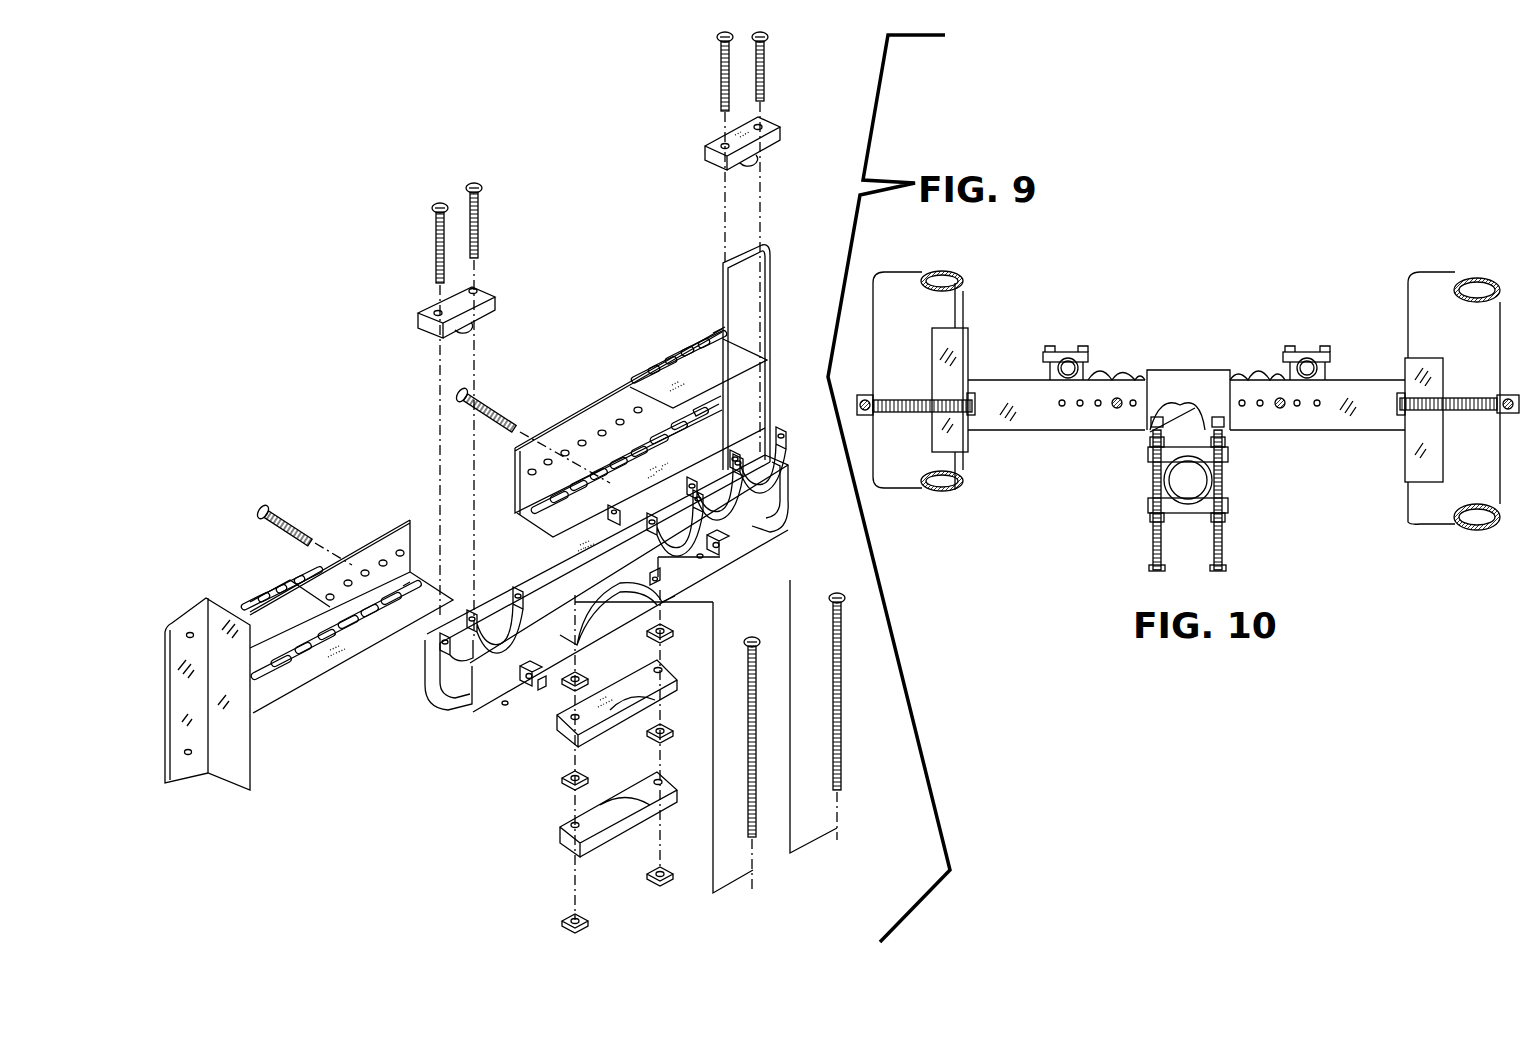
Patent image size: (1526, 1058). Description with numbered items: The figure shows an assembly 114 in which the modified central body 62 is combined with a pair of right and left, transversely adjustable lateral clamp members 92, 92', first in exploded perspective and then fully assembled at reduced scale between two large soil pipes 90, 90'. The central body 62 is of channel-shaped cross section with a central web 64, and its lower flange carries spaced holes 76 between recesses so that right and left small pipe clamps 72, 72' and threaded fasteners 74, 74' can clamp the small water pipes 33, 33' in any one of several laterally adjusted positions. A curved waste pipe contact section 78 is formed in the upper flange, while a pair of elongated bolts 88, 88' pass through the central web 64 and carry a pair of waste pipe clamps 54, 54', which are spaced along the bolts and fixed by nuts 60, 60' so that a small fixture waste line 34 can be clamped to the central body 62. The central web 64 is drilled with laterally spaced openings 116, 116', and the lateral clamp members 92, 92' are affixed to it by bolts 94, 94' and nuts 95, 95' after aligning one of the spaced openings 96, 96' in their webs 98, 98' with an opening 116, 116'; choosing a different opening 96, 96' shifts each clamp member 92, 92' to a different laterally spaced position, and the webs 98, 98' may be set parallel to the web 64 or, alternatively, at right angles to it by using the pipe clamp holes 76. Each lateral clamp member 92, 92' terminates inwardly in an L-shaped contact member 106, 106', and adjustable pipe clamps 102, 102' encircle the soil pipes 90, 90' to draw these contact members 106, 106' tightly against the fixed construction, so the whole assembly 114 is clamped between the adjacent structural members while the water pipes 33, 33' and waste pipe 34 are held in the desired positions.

In FIG. 10, the small pipe 33 is at (1326, 350).
In FIG. 10, the small pipe 33' is at (1065, 348).
In FIG. 10, the waste pipe 34 is at (1215, 470).
In FIG. 9, the waste pipe clamp 54 is at (631, 814).
In FIG. 10, the waste pipe clamp 54 is at (1208, 513).
In FIG. 9, the waste pipe clamp 54' is at (634, 703).
In FIG. 10, the waste pipe clamp 54' is at (1209, 459).
In FIG. 9, the nut 60 is at (675, 779).
In FIG. 10, the nut 60 is at (1221, 492).
In FIG. 9, the nut 60' is at (562, 820).
In FIG. 9, the modified central body 62 is at (790, 492).
In FIG. 10, the modified central body 62 is at (1173, 387).
In FIG. 9, the central web 64 is at (540, 670).
In FIG. 9, the small pipe clamp 72 is at (765, 141).
In FIG. 10, the small pipe clamp 72 is at (1306, 347).
In FIG. 9, the small pipe clamp 72' is at (478, 306).
In FIG. 10, the small pipe clamp 72' is at (1084, 350).
In FIG. 9, the threaded fastener 74 is at (761, 243).
In FIG. 10, the threaded fastener 74 is at (1336, 353).
In FIG. 9, the threaded fastener 74' is at (479, 411).
In FIG. 10, the threaded fastener 74' is at (1103, 350).
In FIG. 9, the spaced holes 76 is at (783, 458).
In FIG. 9, the curved waste pipe contact section 78 is at (610, 613).
In FIG. 10, the curved waste pipe contact section 78 is at (1160, 460).
In FIG. 9, the elongated bolt 88 is at (855, 716).
In FIG. 10, the elongated bolt 88 is at (1249, 501).
In FIG. 9, the elongated bolt 88' is at (786, 767).
In FIG. 10, the elongated bolt 88' is at (1176, 494).
In FIG. 10, the soil pipe 90 is at (1418, 386).
In FIG. 10, the soil pipe 90' is at (948, 381).
In FIG. 9, the lateral clamp member 92 is at (640, 433).
In FIG. 10, the lateral clamp member 92 is at (1317, 349).
In FIG. 9, the lateral clamp member 92' is at (351, 601).
In FIG. 10, the lateral clamp member 92' is at (1056, 389).
In FIG. 9, the bolt 94 is at (532, 428).
In FIG. 10, the bolt 94 is at (1397, 428).
In FIG. 9, the bolt 94' is at (303, 529).
In FIG. 10, the bolt 94' is at (989, 430).
In FIG. 9, the nut 95 is at (772, 568).
In FIG. 9, the nut 95' is at (525, 729).
In FIG. 9, the spaced openings 96 is at (585, 426).
In FIG. 9, the spaced openings 96' is at (338, 575).
In FIG. 9, the central web 98 is at (693, 370).
In FIG. 9, the central web 98' is at (337, 545).
In FIG. 10, the adjustable clamp 102 is at (1401, 420).
In FIG. 10, the adjustable clamp 102' is at (988, 402).
In FIG. 9, the L-shaped contact member 106 is at (771, 357).
In FIG. 10, the L-shaped contact member 106 is at (1400, 445).
In FIG. 9, the L-shaped contact member 106' is at (207, 717).
In FIG. 10, the L-shaped contact member 106' is at (978, 396).
In FIG. 10, the assembly 114 is at (1203, 363).
In FIG. 9, the laterally spaced opening 116 is at (771, 543).
In FIG. 9, the laterally spaced opening 116' is at (511, 703).